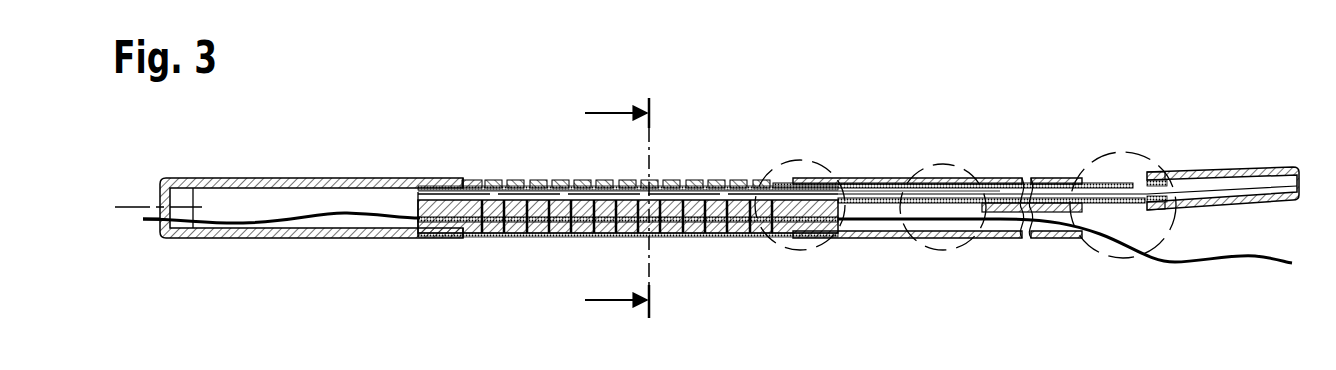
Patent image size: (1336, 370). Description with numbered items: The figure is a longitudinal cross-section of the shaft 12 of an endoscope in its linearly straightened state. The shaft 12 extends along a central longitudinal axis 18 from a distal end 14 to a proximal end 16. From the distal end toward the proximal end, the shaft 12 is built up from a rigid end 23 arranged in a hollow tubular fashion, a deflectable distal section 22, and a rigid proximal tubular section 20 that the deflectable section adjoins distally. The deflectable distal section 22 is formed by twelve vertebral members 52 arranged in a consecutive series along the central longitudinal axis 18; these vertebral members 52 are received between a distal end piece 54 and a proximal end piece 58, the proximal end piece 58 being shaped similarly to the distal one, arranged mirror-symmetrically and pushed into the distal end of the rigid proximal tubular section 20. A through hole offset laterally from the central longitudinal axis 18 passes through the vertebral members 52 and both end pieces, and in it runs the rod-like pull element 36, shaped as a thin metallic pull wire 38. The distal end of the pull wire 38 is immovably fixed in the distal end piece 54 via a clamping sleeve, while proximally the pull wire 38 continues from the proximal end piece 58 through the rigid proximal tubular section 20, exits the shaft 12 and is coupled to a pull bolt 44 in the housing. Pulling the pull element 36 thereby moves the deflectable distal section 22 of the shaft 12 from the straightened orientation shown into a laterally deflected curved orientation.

The shaft 12 is at (716, 108).
The distal end 14 is at (165, 177).
The proximal end 16 is at (1078, 178).
The central longitudinal axis 18 is at (128, 205).
The rigid proximal tubular section 20 is at (878, 178).
The deflectable distal section 22 is at (502, 155).
The rigid end 23 is at (310, 178).
The pull element 36 is at (677, 180).
The pull wire 38 is at (432, 186).
The pull bolt 44 is at (1262, 172).
The vertebral member 52 is at (648, 180).
The distal end piece 54 is at (470, 184).
The proximal end piece 58 is at (770, 238).